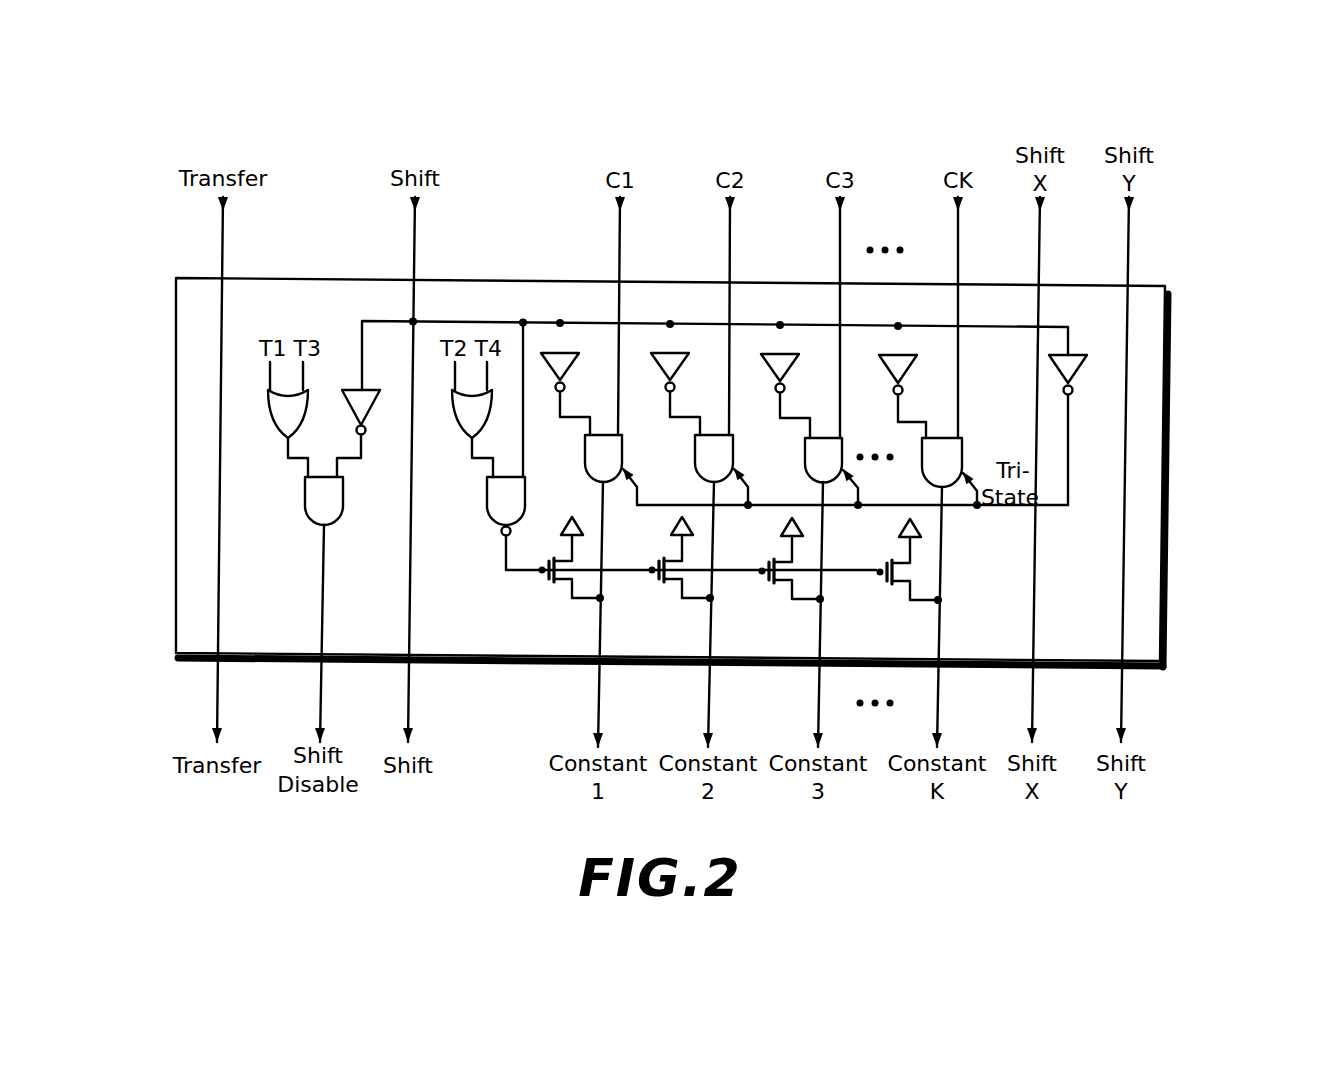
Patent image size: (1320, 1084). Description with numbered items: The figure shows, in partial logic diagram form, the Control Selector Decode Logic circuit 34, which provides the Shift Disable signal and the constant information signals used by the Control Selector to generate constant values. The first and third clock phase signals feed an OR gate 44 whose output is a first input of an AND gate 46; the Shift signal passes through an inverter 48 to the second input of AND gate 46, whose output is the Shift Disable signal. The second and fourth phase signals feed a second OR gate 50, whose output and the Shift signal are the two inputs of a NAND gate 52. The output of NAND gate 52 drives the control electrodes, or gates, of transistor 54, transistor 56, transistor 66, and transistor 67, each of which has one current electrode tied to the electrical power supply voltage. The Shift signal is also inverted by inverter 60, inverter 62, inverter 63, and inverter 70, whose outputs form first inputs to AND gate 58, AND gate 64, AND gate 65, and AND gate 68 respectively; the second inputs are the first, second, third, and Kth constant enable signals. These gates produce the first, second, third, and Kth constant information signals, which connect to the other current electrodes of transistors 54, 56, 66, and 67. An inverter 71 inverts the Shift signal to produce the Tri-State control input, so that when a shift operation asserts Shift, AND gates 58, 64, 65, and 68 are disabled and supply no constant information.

The Control Selector Decode Logic circuit 34 is at (1225, 646).
The OR gate 44 is at (270, 404).
The AND gate 46 is at (305, 490).
The inverter 48 is at (350, 406).
The OR gate 50 is at (456, 420).
The NAND gate 52 is at (490, 492).
The transistor 54 is at (553, 590).
The transistor 56 is at (667, 582).
The AND gate 58 is at (585, 453).
The inverter 60 is at (566, 380).
The inverter 62 is at (676, 380).
The inverter 63 is at (786, 381).
The AND gate 64 is at (695, 455).
The AND gate 65 is at (805, 455).
The transistor 66 is at (777, 583).
The transistor 67 is at (891, 584).
The AND gate 68 is at (964, 442).
The inverter 70 is at (904, 383).
The inverter 71 is at (1074, 383).